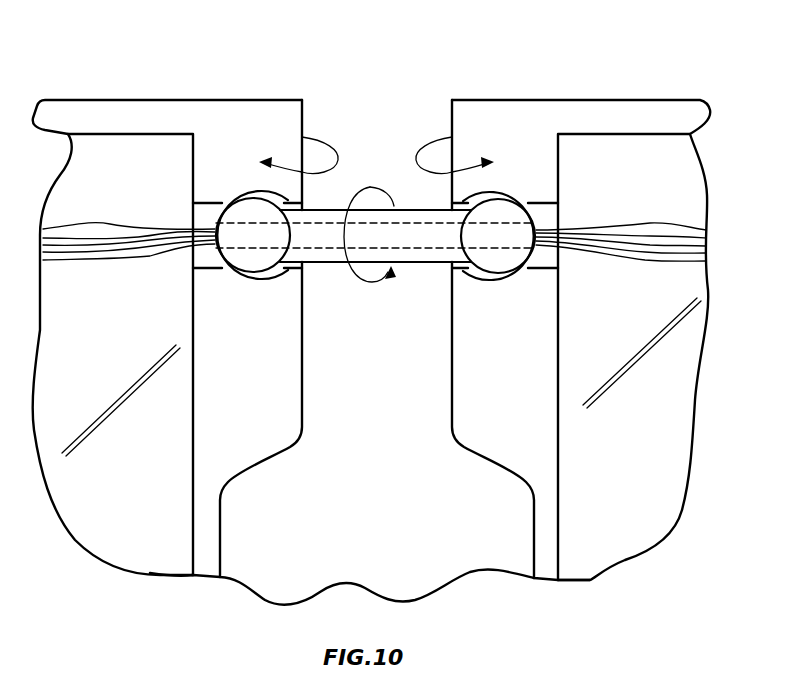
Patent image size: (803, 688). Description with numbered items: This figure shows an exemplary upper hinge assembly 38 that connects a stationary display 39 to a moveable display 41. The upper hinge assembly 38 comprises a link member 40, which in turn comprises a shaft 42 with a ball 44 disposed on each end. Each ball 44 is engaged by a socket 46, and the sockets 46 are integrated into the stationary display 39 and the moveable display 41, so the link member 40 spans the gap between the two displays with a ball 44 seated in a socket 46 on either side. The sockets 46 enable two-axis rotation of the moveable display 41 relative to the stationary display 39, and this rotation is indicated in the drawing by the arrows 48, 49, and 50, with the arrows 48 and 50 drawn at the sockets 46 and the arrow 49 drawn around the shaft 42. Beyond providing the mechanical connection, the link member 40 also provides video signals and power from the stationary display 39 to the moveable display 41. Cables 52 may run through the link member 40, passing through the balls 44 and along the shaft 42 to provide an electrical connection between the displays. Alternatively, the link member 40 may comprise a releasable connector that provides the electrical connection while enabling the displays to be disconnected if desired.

The upper hinge assembly 38 is at (440, 58).
The stationary display 39 is at (146, 117).
The link member 40 is at (327, 203).
The moveable display 41 is at (670, 116).
The shaft 42 is at (437, 265).
The ball 44 is at (253, 207).
The socket 46 is at (262, 282).
The arrow 48 is at (318, 143).
The arrow 49 is at (355, 277).
The arrow 50 is at (427, 142).
The cable 52 is at (132, 226).